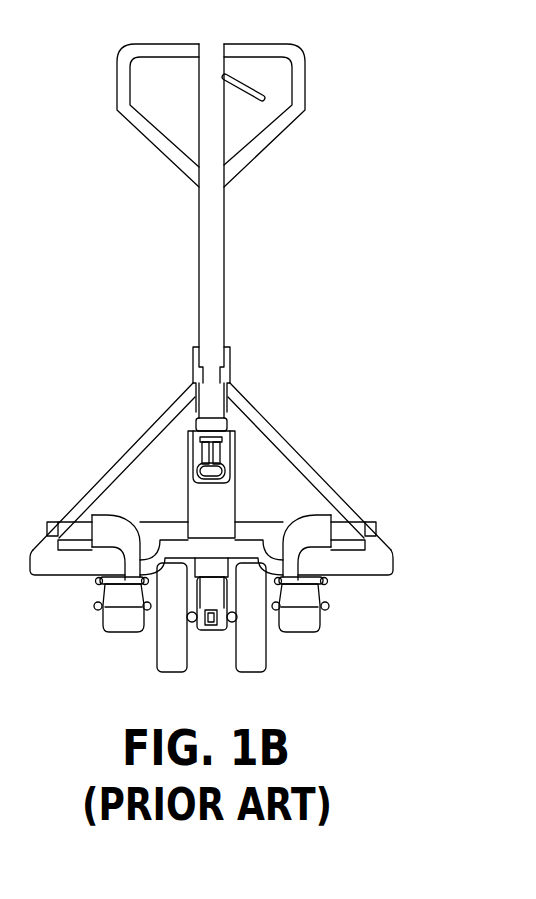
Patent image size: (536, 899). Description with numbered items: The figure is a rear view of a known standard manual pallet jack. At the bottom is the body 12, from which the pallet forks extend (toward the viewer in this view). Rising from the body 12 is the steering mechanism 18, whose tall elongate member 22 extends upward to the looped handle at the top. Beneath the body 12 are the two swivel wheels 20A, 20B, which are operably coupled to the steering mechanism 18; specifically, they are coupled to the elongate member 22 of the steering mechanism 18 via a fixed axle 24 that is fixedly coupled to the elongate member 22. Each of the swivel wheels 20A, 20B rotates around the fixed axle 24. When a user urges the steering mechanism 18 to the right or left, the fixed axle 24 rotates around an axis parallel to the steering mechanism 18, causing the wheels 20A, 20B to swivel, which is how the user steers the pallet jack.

The steering mechanism 18 is at (82, 264).
The elongate member 22 is at (224, 310).
The body 12 is at (145, 482).
The swivel wheel 20A is at (157, 637).
The swivel wheel 20B is at (268, 632).
The fixed axle 24 is at (190, 632).